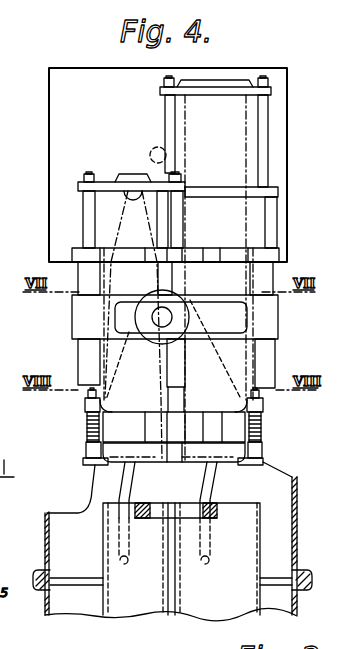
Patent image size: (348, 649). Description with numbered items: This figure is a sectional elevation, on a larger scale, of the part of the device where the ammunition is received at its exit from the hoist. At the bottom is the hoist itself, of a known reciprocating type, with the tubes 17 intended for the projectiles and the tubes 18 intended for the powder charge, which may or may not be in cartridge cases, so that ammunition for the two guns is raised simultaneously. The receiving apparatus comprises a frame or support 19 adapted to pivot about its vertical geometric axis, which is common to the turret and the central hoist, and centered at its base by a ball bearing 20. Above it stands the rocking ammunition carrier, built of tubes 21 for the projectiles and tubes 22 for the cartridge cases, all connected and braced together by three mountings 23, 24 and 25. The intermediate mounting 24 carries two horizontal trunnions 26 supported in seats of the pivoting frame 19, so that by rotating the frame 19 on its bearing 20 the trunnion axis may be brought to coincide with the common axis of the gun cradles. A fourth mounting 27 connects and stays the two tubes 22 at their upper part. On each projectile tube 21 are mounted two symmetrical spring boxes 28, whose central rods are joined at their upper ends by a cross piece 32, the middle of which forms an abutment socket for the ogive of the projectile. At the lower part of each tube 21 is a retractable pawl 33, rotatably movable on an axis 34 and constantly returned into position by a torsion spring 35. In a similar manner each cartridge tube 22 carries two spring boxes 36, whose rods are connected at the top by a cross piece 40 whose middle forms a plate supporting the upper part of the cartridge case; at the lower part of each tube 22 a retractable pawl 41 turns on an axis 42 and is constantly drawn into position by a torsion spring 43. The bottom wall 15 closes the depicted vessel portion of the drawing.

The bottom wall of vessel 15 is at (48, 608).
The tube 17 is at (108, 600).
The tube 18 is at (242, 555).
The frame or support 19 is at (47, 523).
The ball bearing 20 is at (42, 577).
The tube 21 is at (115, 285).
The tube 22 is at (243, 292).
The mounting 23 is at (86, 255).
The intermediate mounting 24 is at (83, 322).
The mounting 25 is at (122, 427).
The horizontal trunnion 26 is at (165, 314).
The fourth mounting 27 is at (220, 191).
The spring box 28 is at (85, 350).
The cross piece 32 is at (104, 181).
The retractable pawl 33 is at (85, 460).
The axis 34 is at (88, 433).
The torsion spring 35 is at (85, 412).
The spring box 36 is at (268, 357).
The cross piece 40 is at (225, 89).
The retractable pawl 41 is at (263, 460).
The axis 42 is at (262, 416).
The torsion spring 43 is at (260, 432).